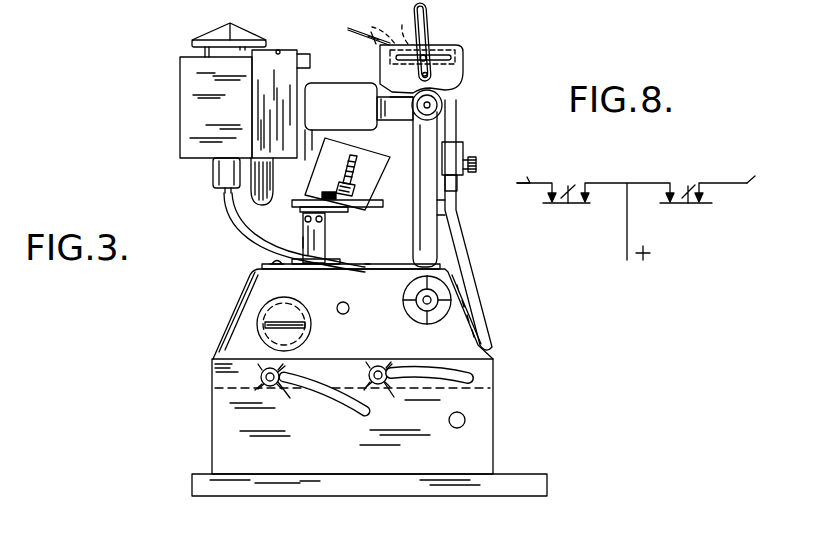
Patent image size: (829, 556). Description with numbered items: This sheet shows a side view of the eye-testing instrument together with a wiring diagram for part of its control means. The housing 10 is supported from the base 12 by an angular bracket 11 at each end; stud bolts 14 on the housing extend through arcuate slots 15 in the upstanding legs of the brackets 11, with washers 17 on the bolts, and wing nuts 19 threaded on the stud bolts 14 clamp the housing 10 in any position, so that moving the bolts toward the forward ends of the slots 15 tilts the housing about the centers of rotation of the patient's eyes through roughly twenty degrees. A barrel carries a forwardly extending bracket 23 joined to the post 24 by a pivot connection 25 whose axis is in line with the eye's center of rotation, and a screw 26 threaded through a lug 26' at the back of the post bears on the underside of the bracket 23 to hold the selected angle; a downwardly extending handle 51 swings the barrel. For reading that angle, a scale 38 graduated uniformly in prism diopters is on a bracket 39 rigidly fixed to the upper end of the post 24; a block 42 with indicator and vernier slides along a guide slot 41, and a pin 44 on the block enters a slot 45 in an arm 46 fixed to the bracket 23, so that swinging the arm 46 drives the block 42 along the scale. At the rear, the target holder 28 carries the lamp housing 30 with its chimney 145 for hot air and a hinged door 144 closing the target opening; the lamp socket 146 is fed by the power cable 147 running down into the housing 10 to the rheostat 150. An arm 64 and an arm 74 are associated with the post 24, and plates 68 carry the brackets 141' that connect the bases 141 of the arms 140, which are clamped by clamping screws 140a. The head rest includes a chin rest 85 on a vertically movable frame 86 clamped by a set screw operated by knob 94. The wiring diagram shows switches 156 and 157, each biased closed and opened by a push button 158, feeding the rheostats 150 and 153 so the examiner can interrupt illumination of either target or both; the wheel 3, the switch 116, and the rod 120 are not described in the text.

In FIG. 3, the handwheel 3 is at (455, 306).
In FIG. 3, the housing 10 is at (462, 338).
In FIG. 3, the angular bracket 11 is at (480, 439).
In FIG. 3, the base 12 is at (545, 478).
In FIG. 3, the stud bolt 14 is at (386, 384).
In FIG. 3, the arcuate slot 15 is at (345, 414).
In FIG. 3, the washer 17 is at (284, 380).
In FIG. 3, the wing nut 19 is at (260, 389).
In FIG. 3, the bracket 23 is at (338, 132).
In FIG. 3, the post 24 is at (432, 232).
In FIG. 3, the pivot connection 25 is at (442, 106).
In FIG. 3, the screw 26 is at (336, 175).
In FIG. 3, the lug 26' is at (334, 165).
In FIG. 3, the target holder 28 is at (303, 80).
In FIG. 3, the lamp housing 30 is at (187, 106).
In FIG. 3, the scale 38 is at (370, 26).
In FIG. 3, the bracket 39 is at (440, 45).
In FIG. 3, the slot 41 is at (398, 24).
In FIG. 3, the block 42 is at (412, 62).
In FIG. 3, the pin 44 is at (456, 52).
In FIG. 3, the slot 45 is at (430, 75).
In FIG. 3, the arm 46 is at (428, 8).
In FIG. 3, the handle 51 is at (272, 182).
In FIG. 3, the arm 64 is at (410, 278).
In FIG. 3, the plate 68 is at (328, 270).
In FIG. 3, the arm 74 is at (392, 268).
In FIG. 3, the chin rest 85 is at (405, 208).
In FIG. 3, the frame 86 is at (480, 283).
In FIG. 3, the knob 94 is at (465, 418).
In FIG. 3, the switch 116 is at (478, 160).
In FIG. 3, the indicator rod 120 is at (354, 33).
In FIG. 3, the arm 140 is at (376, 181).
In FIG. 3, the clamping screw 140a is at (298, 203).
In FIG. 3, the base 141 is at (341, 232).
In FIG. 3, the bracket 141' is at (285, 236).
In FIG. 3, the door 144 is at (290, 52).
In FIG. 3, the chimney 145 is at (238, 32).
In FIG. 3, the lamp socket 146 is at (213, 173).
In FIG. 3, the power cable 147 is at (231, 212).
In FIG. 3, the rheostat 150 is at (306, 338).
In FIG. 8, the rheostat 150 is at (514, 171).
In FIG. 8, the rheostat 153 is at (753, 166).
In FIG. 8, the switch 156 is at (568, 208).
In FIG. 8, the switch 157 is at (693, 208).
In FIG. 8, the push button 158 is at (570, 183).